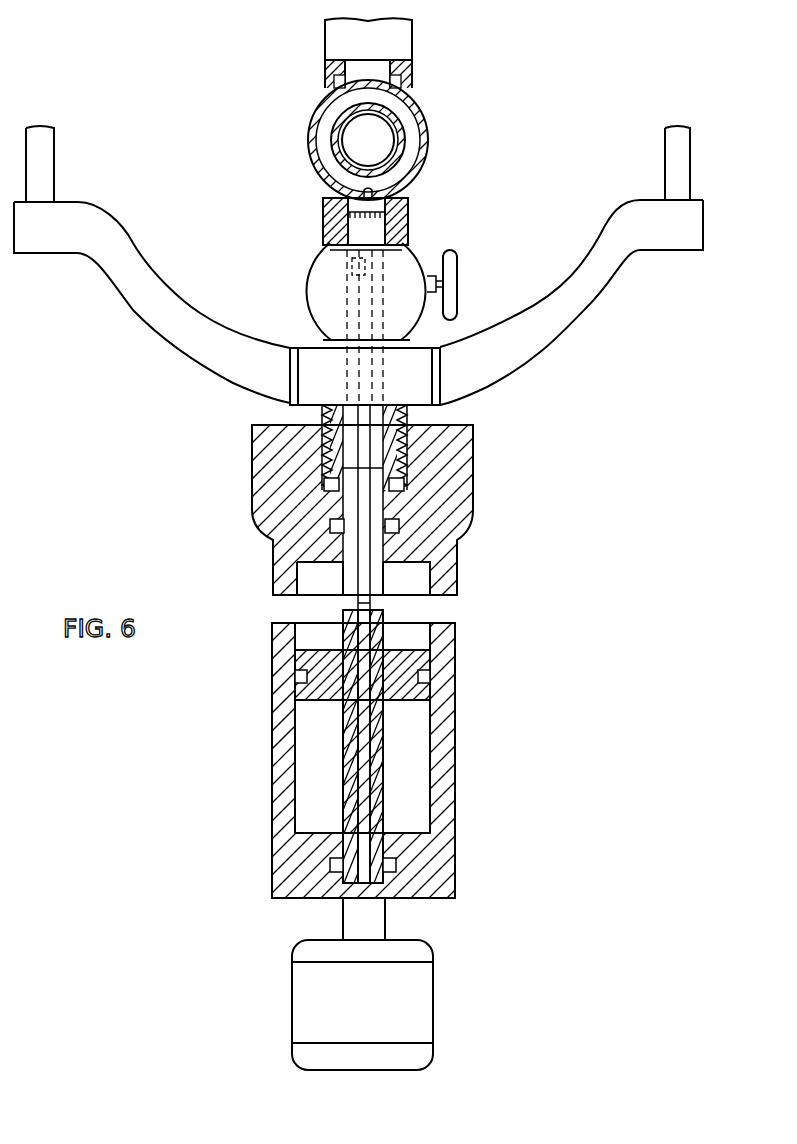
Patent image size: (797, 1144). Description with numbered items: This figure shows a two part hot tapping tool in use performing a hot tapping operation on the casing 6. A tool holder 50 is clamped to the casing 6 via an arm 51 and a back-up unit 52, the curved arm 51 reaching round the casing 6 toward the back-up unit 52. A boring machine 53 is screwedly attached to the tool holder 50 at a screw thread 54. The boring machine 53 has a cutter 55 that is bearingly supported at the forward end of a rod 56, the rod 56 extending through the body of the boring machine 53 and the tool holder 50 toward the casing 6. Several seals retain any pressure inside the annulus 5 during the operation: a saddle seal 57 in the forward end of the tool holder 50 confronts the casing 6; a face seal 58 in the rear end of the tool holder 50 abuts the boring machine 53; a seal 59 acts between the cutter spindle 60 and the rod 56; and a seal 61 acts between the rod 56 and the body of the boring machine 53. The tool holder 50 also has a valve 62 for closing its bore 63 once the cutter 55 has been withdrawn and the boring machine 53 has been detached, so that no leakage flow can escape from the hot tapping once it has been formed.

The back-up unit 52 is at (414, 50).
The casing 6 is at (428, 122).
The annulus 5 is at (410, 150).
The cutter 55 is at (386, 212).
The saddle seal 57 is at (325, 208).
The cutter spindle 60 is at (323, 243).
The bore 63 is at (412, 242).
The tool holder 50 is at (432, 250).
The seal 59 is at (345, 268).
The valve 62 is at (312, 283).
The arm 51 is at (127, 297).
The screw thread 54 is at (320, 430).
The rod 56 is at (352, 447).
The face seal 58 is at (330, 484).
The seal 61 is at (340, 527).
The boring machine 53 is at (257, 681).